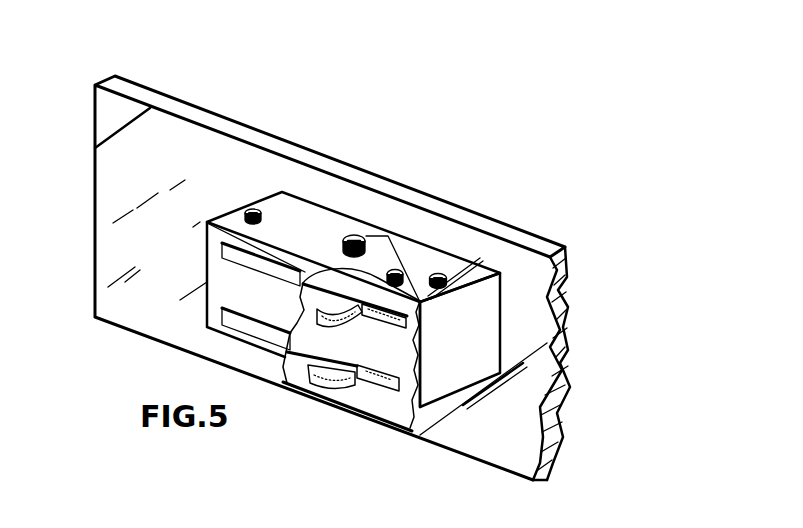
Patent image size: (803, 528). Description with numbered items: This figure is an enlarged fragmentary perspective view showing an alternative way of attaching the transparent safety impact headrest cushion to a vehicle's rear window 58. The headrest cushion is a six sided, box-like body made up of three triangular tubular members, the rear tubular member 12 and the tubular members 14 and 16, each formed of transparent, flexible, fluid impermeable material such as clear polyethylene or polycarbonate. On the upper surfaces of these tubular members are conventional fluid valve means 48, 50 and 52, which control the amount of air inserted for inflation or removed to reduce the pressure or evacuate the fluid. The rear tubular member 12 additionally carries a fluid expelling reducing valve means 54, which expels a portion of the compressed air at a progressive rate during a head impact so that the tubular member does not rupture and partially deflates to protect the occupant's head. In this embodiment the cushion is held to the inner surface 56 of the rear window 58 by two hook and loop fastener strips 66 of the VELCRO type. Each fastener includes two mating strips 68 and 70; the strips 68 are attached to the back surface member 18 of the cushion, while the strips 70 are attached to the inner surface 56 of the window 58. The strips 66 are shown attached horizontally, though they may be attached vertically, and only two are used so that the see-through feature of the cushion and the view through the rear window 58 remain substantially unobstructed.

The rear window 58 is at (88, 237).
The inner surface 56 is at (558, 297).
The rear tubular member 12 is at (353, 311).
The tubular member 16 is at (300, 223).
The tubular member 14 is at (436, 271).
The back surface member 18 is at (426, 338).
The fluid valve means 52 is at (255, 209).
The fluid expelling reducing valve means 54 is at (364, 234).
The fluid valve means 48 is at (397, 270).
The fluid valve means 50 is at (445, 277).
The hook and loop fastener strips 66 is at (278, 271).
The mating strips 68 is at (383, 320).
The mating strips 70 is at (357, 324).